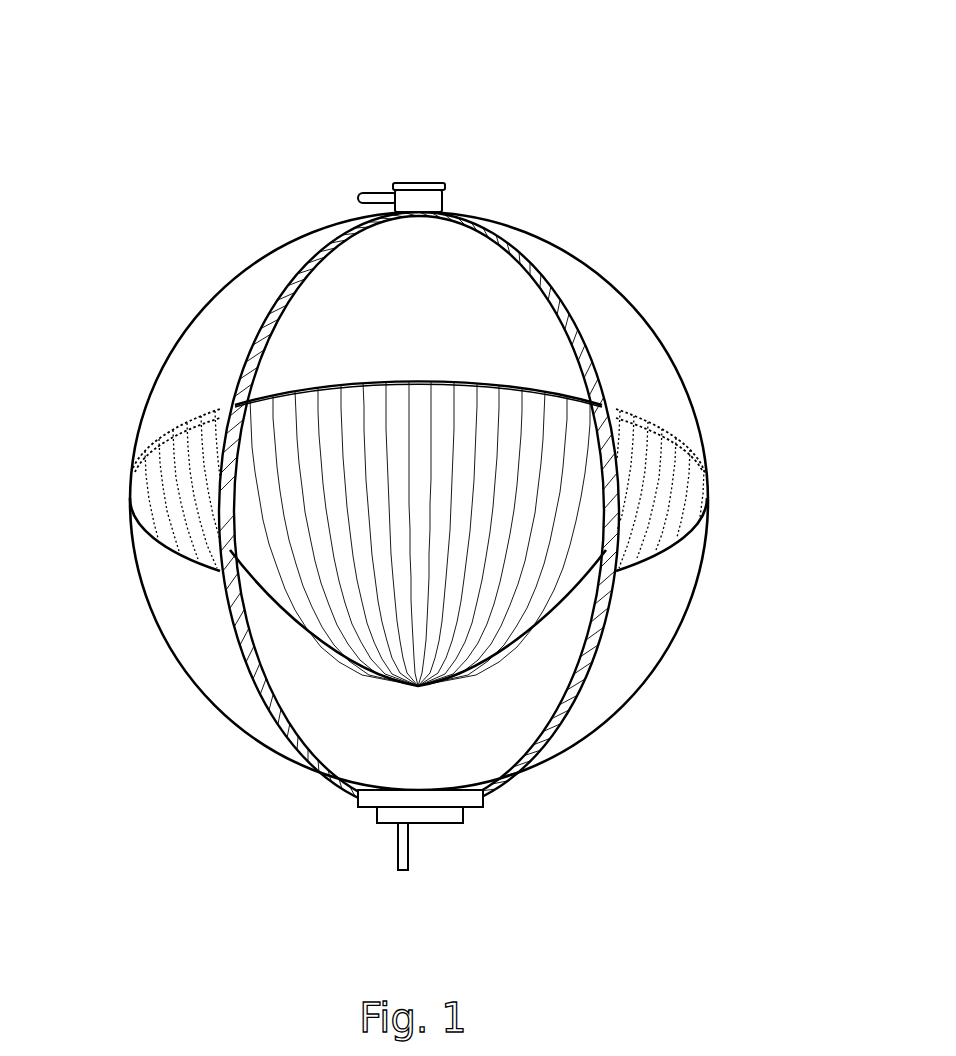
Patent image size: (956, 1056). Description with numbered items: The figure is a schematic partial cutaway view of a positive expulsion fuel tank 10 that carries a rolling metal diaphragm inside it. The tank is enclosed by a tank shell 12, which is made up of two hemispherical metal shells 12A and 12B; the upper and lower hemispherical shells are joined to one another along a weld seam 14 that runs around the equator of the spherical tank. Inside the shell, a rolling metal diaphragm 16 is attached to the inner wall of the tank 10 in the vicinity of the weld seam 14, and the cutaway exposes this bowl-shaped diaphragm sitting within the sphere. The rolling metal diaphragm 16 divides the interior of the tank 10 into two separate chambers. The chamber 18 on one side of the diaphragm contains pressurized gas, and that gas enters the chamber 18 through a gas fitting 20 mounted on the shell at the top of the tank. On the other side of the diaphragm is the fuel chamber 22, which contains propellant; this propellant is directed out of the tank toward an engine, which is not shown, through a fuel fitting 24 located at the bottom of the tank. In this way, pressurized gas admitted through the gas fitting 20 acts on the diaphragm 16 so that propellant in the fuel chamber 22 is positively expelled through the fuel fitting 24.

The positive expulsion fuel tank 10 is at (688, 115).
The tank shell 12 is at (650, 330).
The hemispherical metal shell 12A is at (585, 293).
The hemispherical metal shell 12B is at (645, 630).
The weld seam 14 is at (182, 552).
The rolling metal diaphragm 16 is at (513, 650).
The chamber 18 is at (448, 270).
The gas fitting 20 is at (426, 183).
The fuel chamber 22 is at (300, 690).
The fuel fitting 24 is at (397, 842).